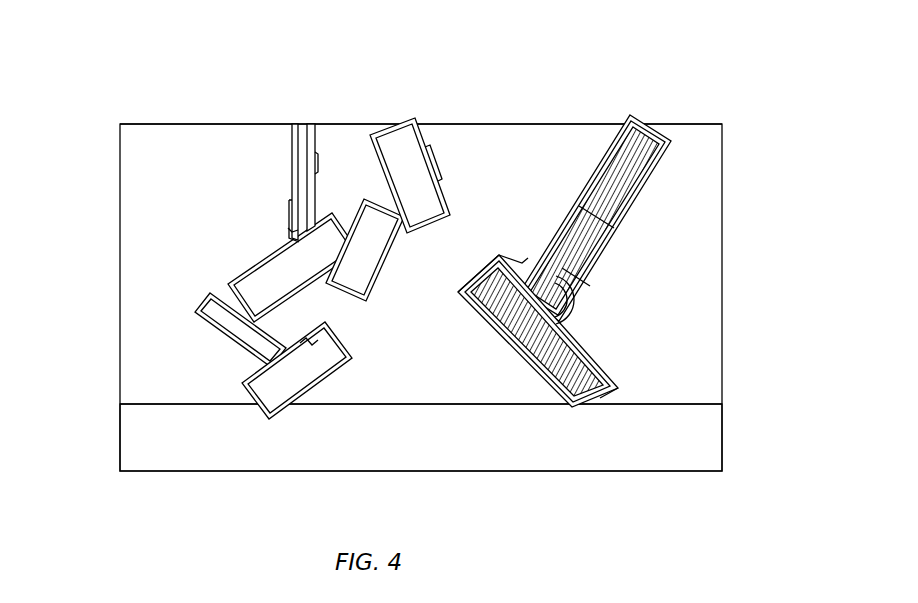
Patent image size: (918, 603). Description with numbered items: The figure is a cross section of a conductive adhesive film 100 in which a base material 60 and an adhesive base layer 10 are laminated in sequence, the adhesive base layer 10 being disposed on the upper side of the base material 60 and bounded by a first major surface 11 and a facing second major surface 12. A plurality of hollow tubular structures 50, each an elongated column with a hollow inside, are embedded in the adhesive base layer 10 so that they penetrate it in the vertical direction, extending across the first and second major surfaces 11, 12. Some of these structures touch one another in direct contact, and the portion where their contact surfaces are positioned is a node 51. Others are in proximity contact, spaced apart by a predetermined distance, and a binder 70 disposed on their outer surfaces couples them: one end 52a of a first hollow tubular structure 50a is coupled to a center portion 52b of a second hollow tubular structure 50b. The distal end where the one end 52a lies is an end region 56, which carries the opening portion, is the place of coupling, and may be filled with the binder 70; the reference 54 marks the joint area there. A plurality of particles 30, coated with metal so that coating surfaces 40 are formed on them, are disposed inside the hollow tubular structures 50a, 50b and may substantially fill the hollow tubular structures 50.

The conductive adhesive film 100 is at (462, 45).
The adhesive base layer 10 is at (150, 340).
The first major surface 11 is at (171, 124).
The second major surface 12 is at (145, 405).
The base material 60 is at (700, 436).
The particles 30 is at (596, 298).
The coating surfaces 40 is at (290, 130).
The hollow tubular structures 50 is at (380, 220).
The first hollow tubular structure 50a is at (642, 221).
The second hollow tubular structure 50b is at (519, 383).
The node 51 is at (283, 212).
The one end of the first hollow tubular structure 52a is at (574, 272).
The center portion of the second hollow tubular structure 52b is at (490, 300).
The joint 54 is at (523, 240).
The end region 56 is at (590, 396).
The binder 70 is at (574, 305).